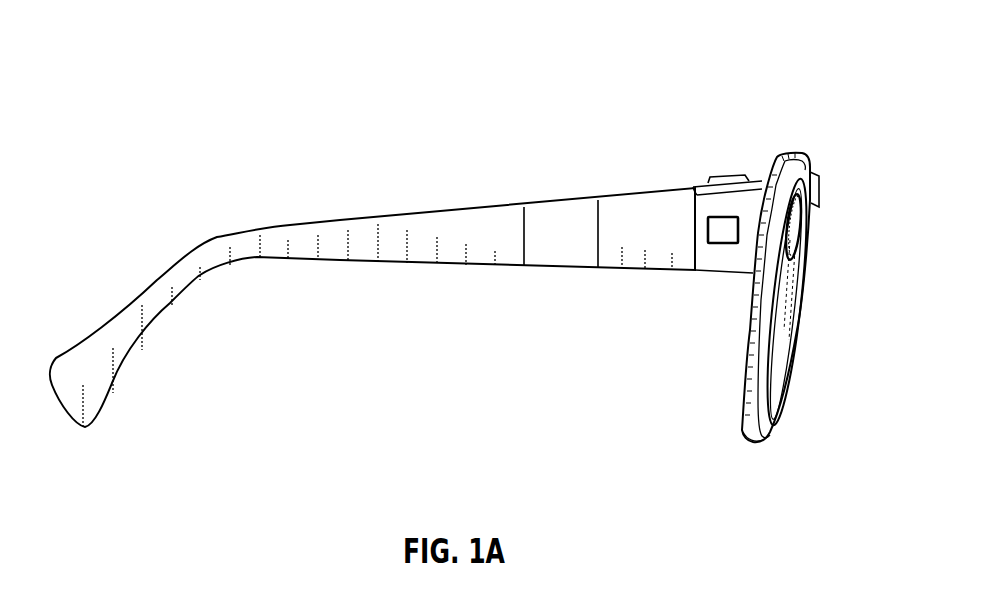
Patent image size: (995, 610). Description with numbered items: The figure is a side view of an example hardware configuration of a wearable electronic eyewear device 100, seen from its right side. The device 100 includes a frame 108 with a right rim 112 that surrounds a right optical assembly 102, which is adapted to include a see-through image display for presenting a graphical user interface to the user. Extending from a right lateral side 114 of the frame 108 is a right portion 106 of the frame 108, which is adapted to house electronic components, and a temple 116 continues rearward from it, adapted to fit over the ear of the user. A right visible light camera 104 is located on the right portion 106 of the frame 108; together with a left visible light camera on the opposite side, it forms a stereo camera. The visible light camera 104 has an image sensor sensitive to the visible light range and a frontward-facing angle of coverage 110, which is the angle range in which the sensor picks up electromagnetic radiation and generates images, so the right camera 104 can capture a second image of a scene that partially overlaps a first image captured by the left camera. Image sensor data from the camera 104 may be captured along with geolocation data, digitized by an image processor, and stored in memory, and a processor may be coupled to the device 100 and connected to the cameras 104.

The wearable electronic eyewear device 100 is at (223, 66).
The right optical assembly 102 is at (778, 357).
The visible light camera 104 is at (787, 268).
The right portion of frame 106 is at (719, 262).
The frame 108 is at (788, 155).
The angle of coverage 110 is at (796, 218).
The right rim 112 is at (750, 435).
The right lateral side 114 is at (735, 183).
The temple 116 is at (262, 240).